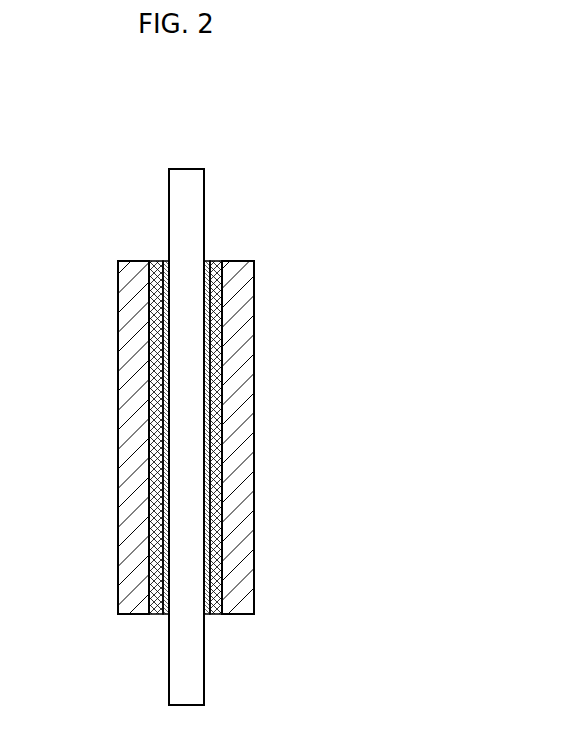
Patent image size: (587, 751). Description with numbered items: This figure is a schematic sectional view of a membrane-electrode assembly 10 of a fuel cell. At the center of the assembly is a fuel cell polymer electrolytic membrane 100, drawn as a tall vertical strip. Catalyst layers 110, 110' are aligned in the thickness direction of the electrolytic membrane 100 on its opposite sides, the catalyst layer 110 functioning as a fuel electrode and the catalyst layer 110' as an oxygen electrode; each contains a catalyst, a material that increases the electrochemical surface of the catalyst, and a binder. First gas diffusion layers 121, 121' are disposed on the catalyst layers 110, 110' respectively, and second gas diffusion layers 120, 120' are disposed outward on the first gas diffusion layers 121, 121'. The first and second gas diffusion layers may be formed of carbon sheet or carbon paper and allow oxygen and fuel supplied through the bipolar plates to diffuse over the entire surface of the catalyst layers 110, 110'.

The membrane-electrode assembly 10 is at (80, 190).
The fuel cell polymer electrolytic membrane 100 is at (185, 175).
The catalyst layer 110 is at (148, 466).
The catalyst layer 110' is at (224, 466).
The second gas diffusion layer 120 is at (91, 437).
The second gas diffusion layer 120' is at (281, 437).
The first gas diffusion layer 121 is at (140, 409).
The first gas diffusion layer 121' is at (231, 409).